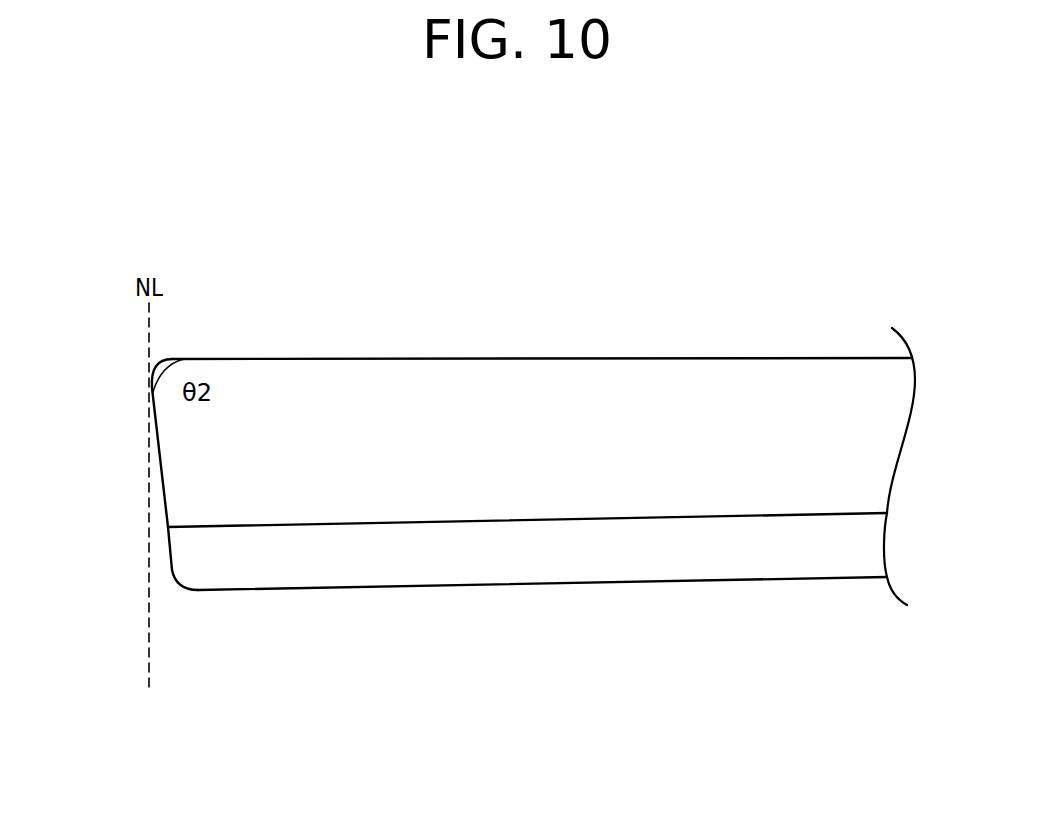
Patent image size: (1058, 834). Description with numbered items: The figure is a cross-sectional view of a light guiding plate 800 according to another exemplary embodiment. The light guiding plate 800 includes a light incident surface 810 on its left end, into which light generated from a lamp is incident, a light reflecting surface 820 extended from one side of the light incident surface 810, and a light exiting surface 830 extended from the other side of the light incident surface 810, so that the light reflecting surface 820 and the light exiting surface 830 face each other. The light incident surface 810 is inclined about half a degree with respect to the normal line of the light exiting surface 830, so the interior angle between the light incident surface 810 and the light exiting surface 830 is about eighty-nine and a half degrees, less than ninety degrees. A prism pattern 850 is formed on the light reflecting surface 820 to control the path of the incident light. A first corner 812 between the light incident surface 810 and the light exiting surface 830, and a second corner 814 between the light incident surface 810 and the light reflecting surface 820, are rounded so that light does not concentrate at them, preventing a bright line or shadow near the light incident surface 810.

The light guiding plate 800 is at (641, 264).
The light incident surface 810 is at (163, 496).
The first corner 812 is at (152, 360).
The second corner 814 is at (175, 586).
The light reflecting surface 820 is at (540, 585).
The light exiting surface 830 is at (486, 358).
The prism pattern 850 is at (648, 548).